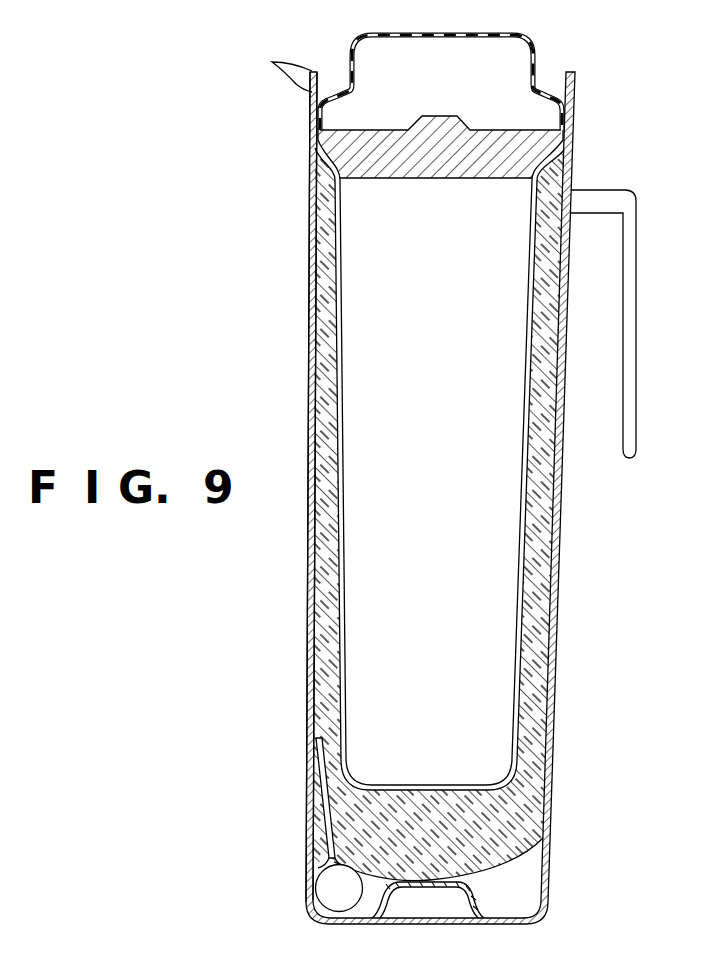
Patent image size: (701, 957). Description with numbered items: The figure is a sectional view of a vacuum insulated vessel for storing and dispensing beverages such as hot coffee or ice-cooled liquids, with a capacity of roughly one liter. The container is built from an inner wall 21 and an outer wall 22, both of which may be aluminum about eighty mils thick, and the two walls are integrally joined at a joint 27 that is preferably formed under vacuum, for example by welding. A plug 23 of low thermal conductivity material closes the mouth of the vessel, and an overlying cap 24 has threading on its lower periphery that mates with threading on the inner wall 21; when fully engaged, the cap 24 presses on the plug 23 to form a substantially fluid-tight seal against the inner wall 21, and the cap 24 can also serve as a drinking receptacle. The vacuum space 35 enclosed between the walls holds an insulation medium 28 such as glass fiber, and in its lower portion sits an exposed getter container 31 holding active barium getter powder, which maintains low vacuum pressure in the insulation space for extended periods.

The inner wall 21 is at (340, 208).
The outer wall 22 is at (312, 135).
The plug 23 is at (449, 116).
The cap 24 is at (352, 45).
The joint 27 is at (577, 82).
The insulation medium 28 is at (542, 645).
The getter container 31 is at (338, 884).
The vacuum space 35 is at (318, 305).